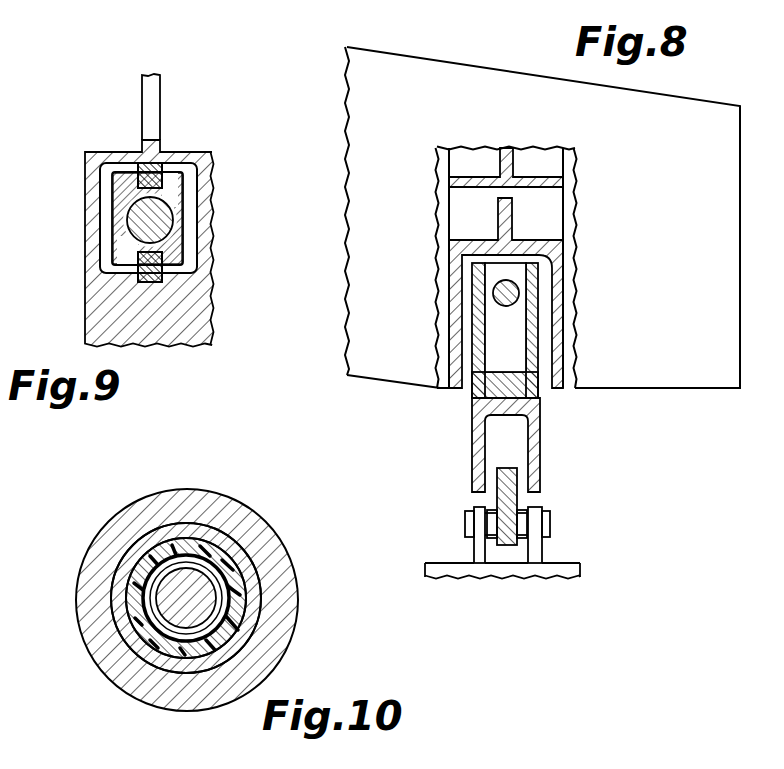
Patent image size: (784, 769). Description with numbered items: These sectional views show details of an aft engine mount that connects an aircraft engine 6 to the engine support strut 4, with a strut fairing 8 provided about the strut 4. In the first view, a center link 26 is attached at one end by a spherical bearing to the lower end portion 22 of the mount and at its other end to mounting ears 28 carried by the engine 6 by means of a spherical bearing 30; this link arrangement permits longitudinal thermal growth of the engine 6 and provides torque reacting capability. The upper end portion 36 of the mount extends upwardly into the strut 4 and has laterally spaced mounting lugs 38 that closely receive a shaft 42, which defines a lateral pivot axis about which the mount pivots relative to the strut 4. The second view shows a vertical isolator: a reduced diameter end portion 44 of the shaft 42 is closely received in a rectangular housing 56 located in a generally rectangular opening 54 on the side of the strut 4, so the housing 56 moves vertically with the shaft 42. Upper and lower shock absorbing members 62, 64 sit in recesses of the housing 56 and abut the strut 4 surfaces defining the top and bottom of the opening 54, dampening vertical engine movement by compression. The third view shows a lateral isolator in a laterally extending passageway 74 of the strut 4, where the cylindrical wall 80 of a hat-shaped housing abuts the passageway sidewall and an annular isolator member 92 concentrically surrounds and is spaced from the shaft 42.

In FIG. 8, the strut 4 is at (565, 333).
In FIG. 9, the strut 4 is at (190, 157).
In FIG. 10, the strut 4 is at (252, 522).
In FIG. 8, the engine 6 is at (566, 570).
In FIG. 8, the strut fairing 8 is at (688, 229).
In FIG. 8, the lower end portion 22 is at (542, 477).
In FIG. 8, the center link 26 is at (510, 494).
In FIG. 8, the mounting ears 28 is at (538, 547).
In FIG. 8, the spherical bearing 30 is at (493, 533).
In FIG. 8, the upper end portion 36 is at (537, 388).
In FIG. 8, the mounting lugs 38 is at (503, 345).
In FIG. 8, the shaft 42 is at (493, 305).
In FIG. 10, the shaft 42 is at (173, 617).
In FIG. 9, the reduced diameter end portions 44 is at (135, 217).
In FIG. 9, the rectangular opening 54 is at (190, 245).
In FIG. 9, the housing 56 is at (173, 207).
In FIG. 9, the upper shock absorbing member 62 is at (160, 175).
In FIG. 9, the lower shock absorbing member 64 is at (143, 262).
In FIG. 10, the passageway 74 is at (147, 600).
In FIG. 10, the cylindrical wall 80 is at (238, 558).
In FIG. 10, the annular isolator member 92 is at (143, 563).